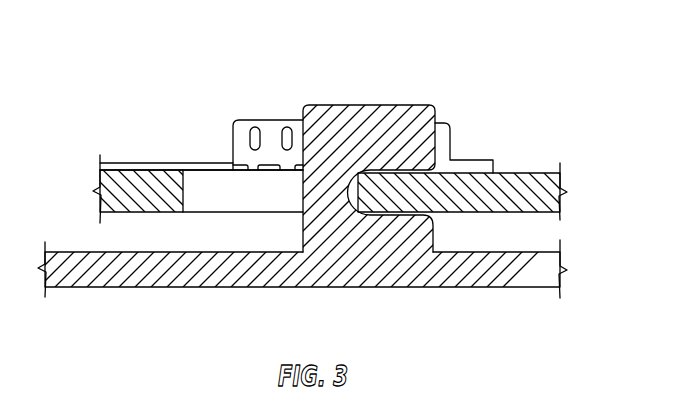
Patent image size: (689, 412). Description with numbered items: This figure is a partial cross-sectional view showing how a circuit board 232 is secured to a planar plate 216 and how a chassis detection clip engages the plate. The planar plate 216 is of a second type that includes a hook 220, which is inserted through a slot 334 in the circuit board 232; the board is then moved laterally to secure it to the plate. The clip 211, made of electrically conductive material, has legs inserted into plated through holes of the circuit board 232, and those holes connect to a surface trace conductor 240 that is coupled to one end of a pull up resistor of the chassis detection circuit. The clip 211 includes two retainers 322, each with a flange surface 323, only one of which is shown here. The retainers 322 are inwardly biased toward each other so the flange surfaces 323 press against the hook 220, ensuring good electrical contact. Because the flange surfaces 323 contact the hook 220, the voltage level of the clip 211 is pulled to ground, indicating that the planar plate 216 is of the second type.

The clip 211 is at (208, 100).
The planar plate 216 is at (493, 300).
The hook 220 is at (352, 128).
The circuit board 232 is at (173, 200).
The surface trace conductor 240 is at (142, 163).
The retainer 322 is at (233, 152).
The flange surface 323 is at (272, 133).
The slot 334 is at (273, 198).